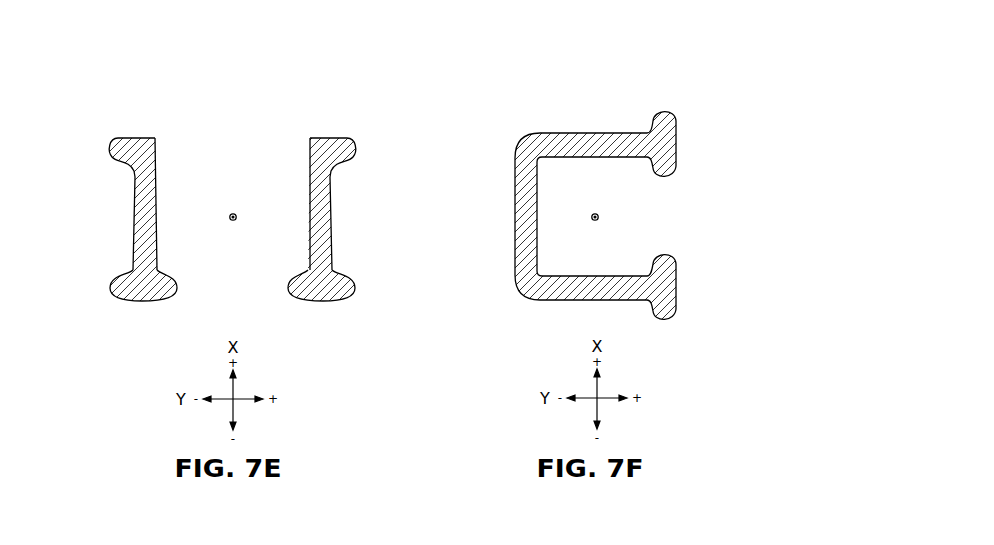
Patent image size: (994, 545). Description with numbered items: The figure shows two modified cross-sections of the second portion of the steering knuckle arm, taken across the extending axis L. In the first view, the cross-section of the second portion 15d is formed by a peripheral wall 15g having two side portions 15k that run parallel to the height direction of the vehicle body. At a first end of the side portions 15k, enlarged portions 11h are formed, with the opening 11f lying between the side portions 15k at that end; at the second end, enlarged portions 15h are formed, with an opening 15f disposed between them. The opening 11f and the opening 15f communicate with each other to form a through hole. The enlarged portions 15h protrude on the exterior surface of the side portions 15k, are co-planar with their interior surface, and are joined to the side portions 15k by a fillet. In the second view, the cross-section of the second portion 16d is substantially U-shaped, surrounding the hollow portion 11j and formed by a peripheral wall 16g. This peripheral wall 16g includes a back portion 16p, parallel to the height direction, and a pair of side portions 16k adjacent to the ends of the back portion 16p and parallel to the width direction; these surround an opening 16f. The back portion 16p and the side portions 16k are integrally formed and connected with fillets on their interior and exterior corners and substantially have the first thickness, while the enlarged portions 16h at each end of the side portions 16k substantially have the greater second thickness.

In FIG. 7E, the second portion 15d is at (378, 129).
In FIG. 7E, the enlarged portions 15h is at (125, 146).
In FIG. 7E, the side portions 15k is at (142, 258).
In FIG. 7E, the opening 15f is at (232, 150).
In FIG. 7E, the peripheral wall 15g is at (117, 200).
In FIG. 7E, the hollow portion 11j is at (162, 200).
In FIG. 7F, the hollow portion 11j is at (545, 200).
In FIG. 7E, the enlarged portion 11h is at (135, 292).
In FIG. 7E, the opening 11f is at (236, 277).
In FIG. 7E, the extending axis L is at (239, 217).
In FIG. 7F, the extending axis L is at (601, 217).
In FIG. 7F, the second portion 16d is at (715, 129).
In FIG. 7F, the enlarged portions 16h is at (668, 147).
In FIG. 7F, the back portion 16p is at (525, 243).
In FIG. 7F, the side portions 16k is at (607, 288).
In FIG. 7F, the opening 16f is at (660, 216).
In FIG. 7F, the peripheral wall 16g is at (492, 254).